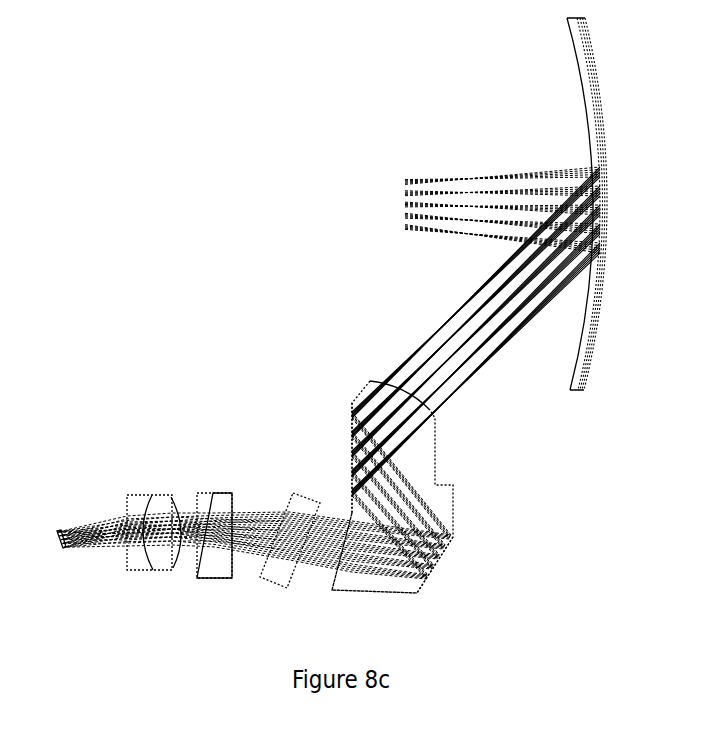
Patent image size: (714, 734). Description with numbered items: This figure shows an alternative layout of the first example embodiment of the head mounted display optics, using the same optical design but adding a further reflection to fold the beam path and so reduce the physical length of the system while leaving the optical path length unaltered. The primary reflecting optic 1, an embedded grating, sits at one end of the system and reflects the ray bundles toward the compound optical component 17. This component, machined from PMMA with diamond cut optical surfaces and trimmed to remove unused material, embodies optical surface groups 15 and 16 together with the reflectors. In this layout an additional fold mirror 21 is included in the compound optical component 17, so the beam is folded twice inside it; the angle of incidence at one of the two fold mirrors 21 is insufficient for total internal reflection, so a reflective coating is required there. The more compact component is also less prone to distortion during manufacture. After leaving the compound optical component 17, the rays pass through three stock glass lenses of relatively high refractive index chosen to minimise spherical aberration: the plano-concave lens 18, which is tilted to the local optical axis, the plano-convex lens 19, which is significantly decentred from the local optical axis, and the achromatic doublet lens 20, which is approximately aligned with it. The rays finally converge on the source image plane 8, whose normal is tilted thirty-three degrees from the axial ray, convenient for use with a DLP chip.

The primary reflecting optic 1 is at (605, 253).
The source image plane 8 is at (65, 547).
The optical surface group 15 is at (430, 412).
The optical surface group 16 is at (330, 582).
The compound optical component 17 is at (423, 457).
The plano-concave lens 18 is at (300, 502).
The plano-convex lens 19 is at (222, 502).
The achromatic doublet lens 20 is at (142, 505).
The fold mirror 21 is at (352, 413).